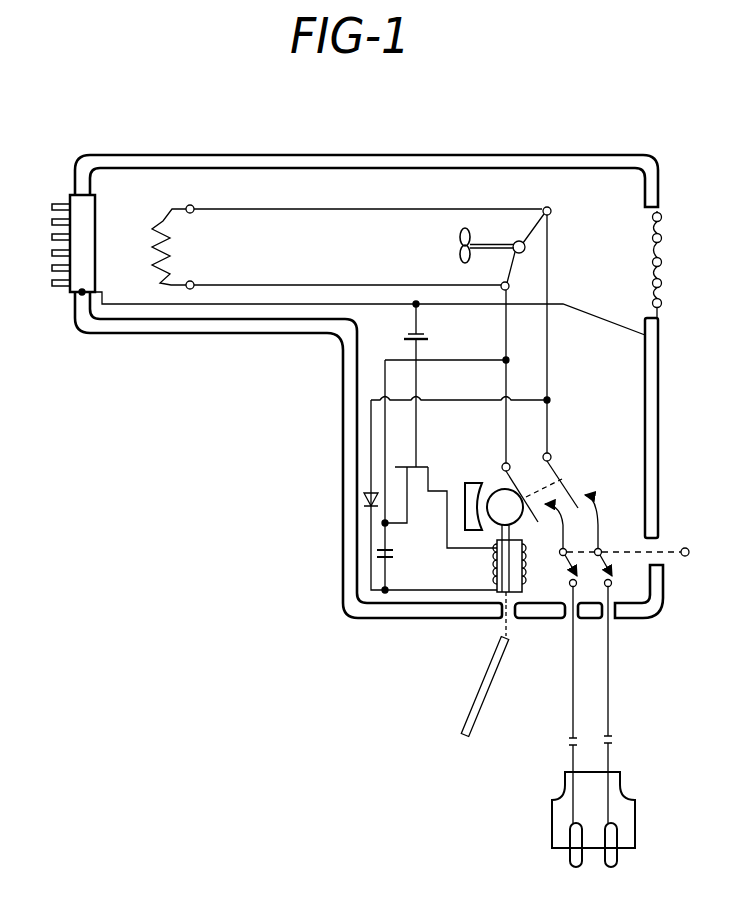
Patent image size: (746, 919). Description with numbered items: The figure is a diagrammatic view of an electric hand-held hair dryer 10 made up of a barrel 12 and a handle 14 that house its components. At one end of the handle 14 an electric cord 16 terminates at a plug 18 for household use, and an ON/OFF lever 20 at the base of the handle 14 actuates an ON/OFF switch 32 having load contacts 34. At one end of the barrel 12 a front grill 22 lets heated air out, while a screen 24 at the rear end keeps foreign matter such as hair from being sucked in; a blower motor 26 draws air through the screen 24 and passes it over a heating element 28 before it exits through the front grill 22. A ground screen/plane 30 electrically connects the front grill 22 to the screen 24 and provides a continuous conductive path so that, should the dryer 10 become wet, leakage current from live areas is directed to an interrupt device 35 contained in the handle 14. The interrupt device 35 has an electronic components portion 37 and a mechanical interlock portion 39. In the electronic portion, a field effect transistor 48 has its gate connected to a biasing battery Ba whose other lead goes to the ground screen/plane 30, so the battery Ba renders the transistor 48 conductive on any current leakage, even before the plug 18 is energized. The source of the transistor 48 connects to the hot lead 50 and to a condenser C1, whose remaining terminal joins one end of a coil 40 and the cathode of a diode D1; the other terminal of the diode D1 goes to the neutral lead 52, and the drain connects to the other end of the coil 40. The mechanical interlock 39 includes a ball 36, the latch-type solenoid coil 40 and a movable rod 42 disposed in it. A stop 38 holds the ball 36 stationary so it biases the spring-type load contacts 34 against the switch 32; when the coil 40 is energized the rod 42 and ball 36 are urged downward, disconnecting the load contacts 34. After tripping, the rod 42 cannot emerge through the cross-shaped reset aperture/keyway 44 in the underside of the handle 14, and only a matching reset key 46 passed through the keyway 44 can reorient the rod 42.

The hair dryer 10 is at (260, 410).
The barrel 12 is at (220, 337).
The handle 14 is at (343, 492).
The electric cord 16 is at (612, 656).
The plug 18 is at (552, 808).
The ON/OFF lever 20 is at (681, 548).
The front grill 22 is at (70, 193).
The screen 24 is at (660, 214).
The blower motor 26 is at (466, 260).
The heating element 28 is at (168, 210).
The ground screen/plane 30 is at (152, 303).
The ON/OFF switch 32 is at (600, 518).
The load contacts 34 is at (572, 492).
The interrupt device 35 is at (373, 469).
The ball 36 is at (493, 490).
The electronic components portion 37 is at (358, 544).
The stop 38 is at (466, 482).
The mechanical interlock portion 39 is at (476, 568).
The coil 40 is at (523, 584).
The movable rod 42 is at (512, 530).
The reset aperture/keyway 44 is at (510, 612).
The reset key 46 is at (482, 690).
The field effect transistor 48 is at (426, 444).
The hot lead 50 is at (505, 388).
The neutral lead 52 is at (552, 396).
The biasing battery Ba is at (421, 336).
The condenser C1 is at (396, 553).
The diode D1 is at (362, 500).